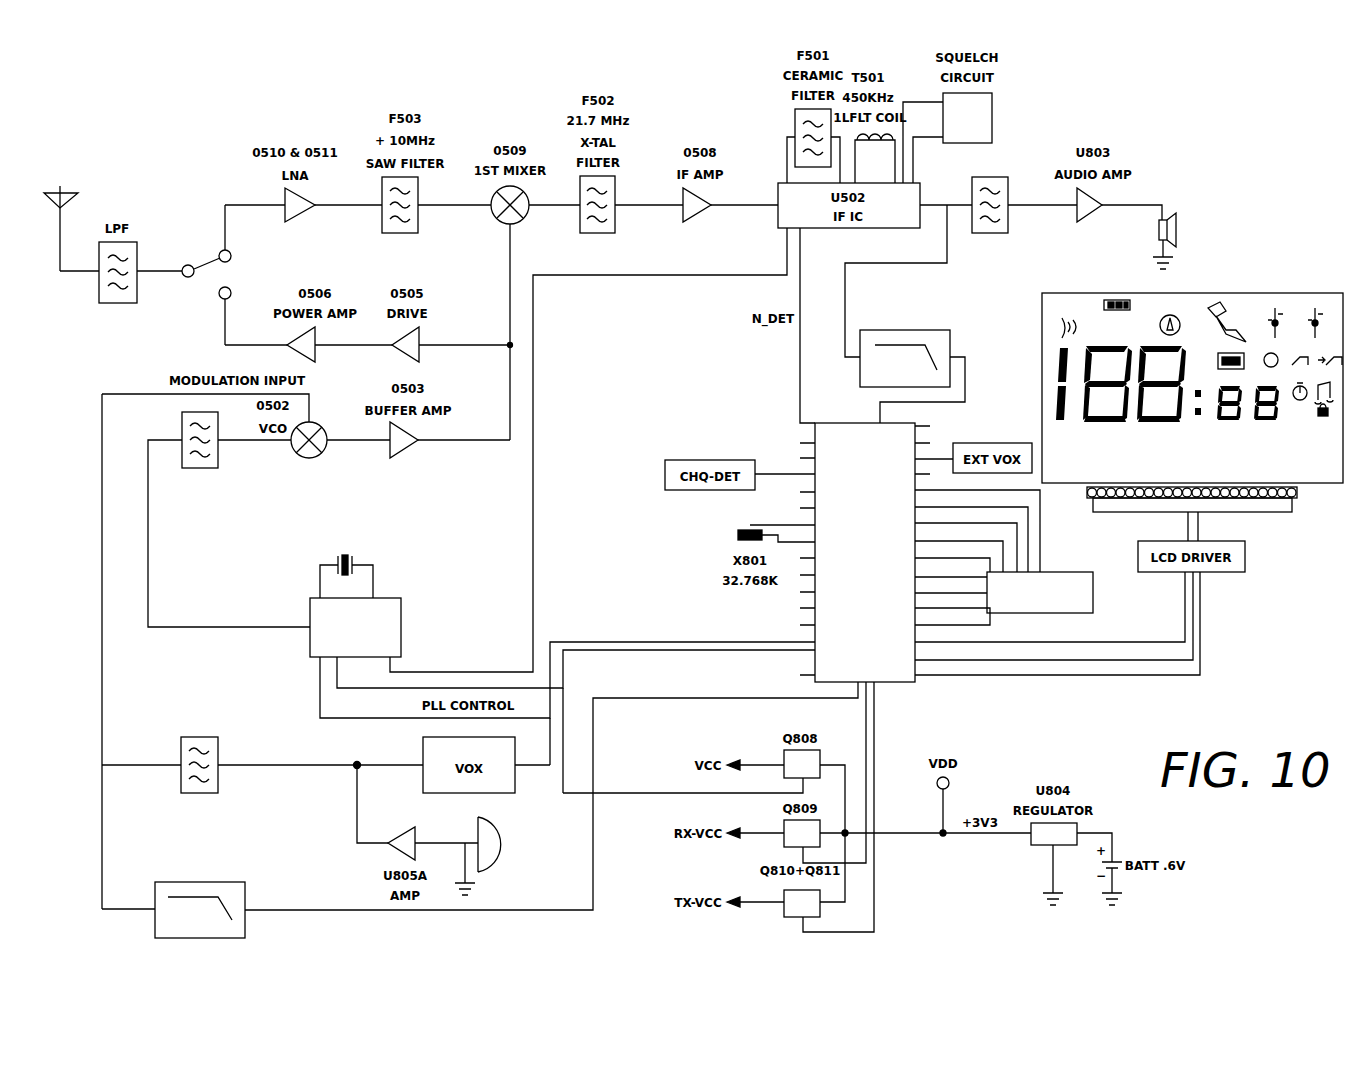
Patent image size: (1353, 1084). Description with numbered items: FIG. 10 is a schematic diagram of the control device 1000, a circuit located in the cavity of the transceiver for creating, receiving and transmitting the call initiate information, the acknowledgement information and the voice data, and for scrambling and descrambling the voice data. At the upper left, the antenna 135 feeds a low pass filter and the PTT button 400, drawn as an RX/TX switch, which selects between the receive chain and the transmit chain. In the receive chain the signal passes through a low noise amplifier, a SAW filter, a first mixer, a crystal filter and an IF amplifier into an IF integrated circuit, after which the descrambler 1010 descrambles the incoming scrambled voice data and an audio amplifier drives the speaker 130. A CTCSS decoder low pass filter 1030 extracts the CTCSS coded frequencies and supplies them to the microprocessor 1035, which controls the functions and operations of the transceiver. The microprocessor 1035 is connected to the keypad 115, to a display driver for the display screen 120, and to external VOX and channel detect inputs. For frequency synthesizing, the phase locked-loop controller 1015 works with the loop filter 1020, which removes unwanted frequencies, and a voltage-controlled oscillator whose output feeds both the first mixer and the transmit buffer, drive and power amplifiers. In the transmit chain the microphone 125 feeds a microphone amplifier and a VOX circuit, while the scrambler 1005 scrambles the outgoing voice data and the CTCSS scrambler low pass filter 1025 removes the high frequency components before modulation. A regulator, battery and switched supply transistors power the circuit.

The control device 1000 is at (275, 88).
The antenna 135 is at (70, 203).
The PTT button 400 is at (202, 248).
The descrambler 1010 is at (1008, 190).
The speaker 130 is at (1170, 222).
The display screen 120 is at (1268, 292).
The CTCSS decoder low pass filter 1030 is at (860, 375).
The microprocessor 1035 is at (890, 644).
The keypad 115 is at (1040, 613).
The loop filter 1020 is at (218, 455).
The phase locked-loop controller 1015 is at (401, 610).
The scrambler 1005 is at (220, 751).
The microphone 125 is at (478, 830).
The CTCSS scrambler low pass filter 1025 is at (245, 893).